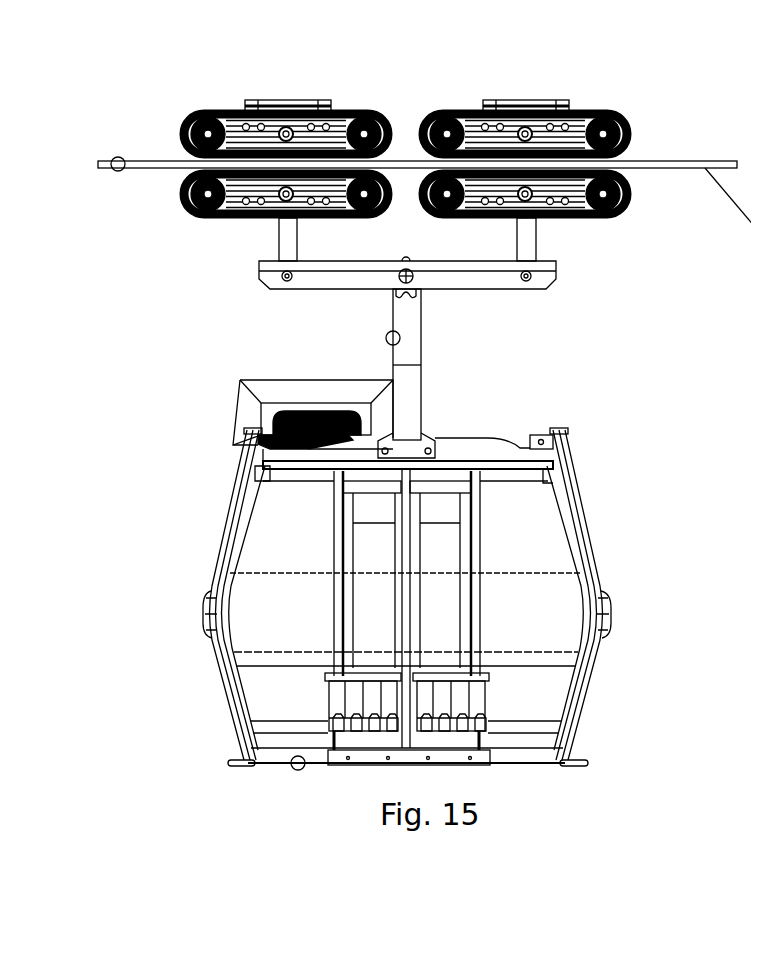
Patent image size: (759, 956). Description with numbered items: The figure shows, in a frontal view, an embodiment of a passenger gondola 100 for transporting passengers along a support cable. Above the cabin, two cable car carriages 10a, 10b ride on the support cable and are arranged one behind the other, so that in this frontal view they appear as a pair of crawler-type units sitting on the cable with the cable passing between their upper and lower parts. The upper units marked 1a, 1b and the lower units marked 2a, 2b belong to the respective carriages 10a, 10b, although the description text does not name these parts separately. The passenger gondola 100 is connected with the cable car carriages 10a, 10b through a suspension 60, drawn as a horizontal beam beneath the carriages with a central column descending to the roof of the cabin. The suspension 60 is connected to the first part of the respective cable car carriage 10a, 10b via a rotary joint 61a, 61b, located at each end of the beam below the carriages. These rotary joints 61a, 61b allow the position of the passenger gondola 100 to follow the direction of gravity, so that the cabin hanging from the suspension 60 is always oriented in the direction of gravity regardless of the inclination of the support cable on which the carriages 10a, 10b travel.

The first drive unit 1a is at (333, 90).
The second drive unit 1b is at (532, 90).
The cable car carriage 10a is at (165, 92).
The cable car carriage 10b is at (638, 129).
The first lower crawler track 2a is at (202, 215).
The second lower crawler track 2b is at (567, 222).
The suspension 60 is at (462, 277).
The rotary joint 61a is at (276, 271).
The rotary joint 61b is at (522, 270).
The passenger gondola 100 is at (187, 672).